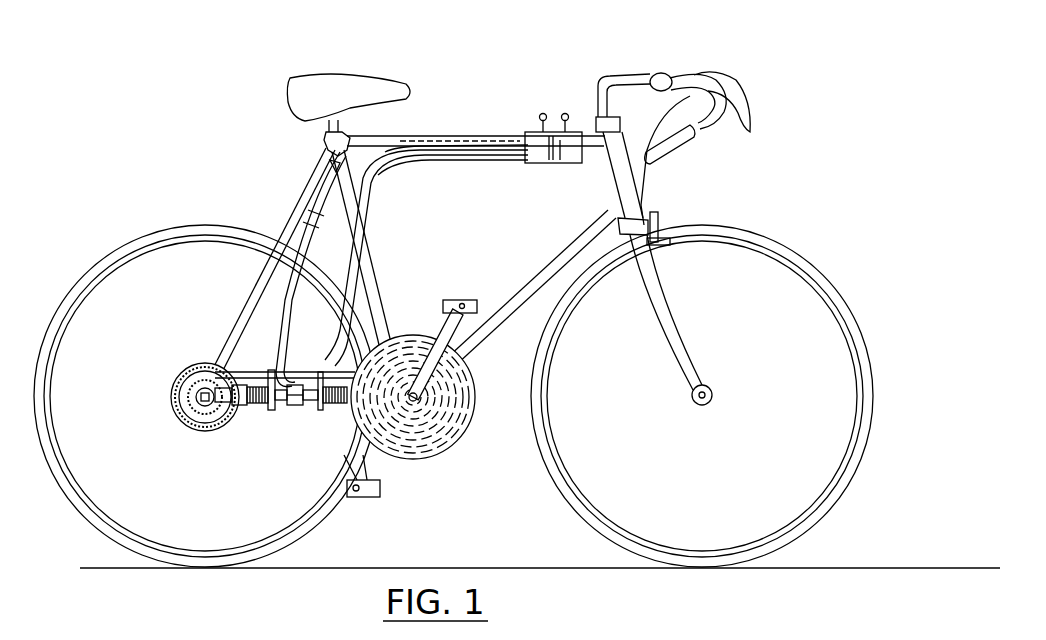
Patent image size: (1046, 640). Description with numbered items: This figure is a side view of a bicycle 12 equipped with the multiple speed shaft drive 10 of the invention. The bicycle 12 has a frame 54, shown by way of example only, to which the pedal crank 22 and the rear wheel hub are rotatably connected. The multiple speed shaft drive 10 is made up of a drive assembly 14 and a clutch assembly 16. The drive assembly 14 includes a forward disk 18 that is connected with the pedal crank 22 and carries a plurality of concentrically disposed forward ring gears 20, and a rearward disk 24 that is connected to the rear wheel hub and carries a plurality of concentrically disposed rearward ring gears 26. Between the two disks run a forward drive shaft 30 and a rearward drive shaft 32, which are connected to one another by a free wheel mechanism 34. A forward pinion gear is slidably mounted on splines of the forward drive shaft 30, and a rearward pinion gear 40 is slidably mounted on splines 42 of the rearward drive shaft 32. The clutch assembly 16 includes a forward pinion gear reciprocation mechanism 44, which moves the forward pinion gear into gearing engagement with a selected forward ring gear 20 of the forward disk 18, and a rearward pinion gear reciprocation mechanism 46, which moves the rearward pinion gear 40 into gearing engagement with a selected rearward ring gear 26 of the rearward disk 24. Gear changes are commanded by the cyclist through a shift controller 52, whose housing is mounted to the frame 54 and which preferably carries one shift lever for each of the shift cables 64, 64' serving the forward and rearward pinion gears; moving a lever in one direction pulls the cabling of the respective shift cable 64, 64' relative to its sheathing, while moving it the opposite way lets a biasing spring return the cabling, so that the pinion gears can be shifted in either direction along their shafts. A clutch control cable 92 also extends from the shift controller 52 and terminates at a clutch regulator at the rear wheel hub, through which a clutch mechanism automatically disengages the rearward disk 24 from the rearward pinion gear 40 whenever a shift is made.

The multiple speed shaft drive 10 is at (509, 172).
The bicycle 12 is at (722, 172).
The drive assembly 14 is at (266, 469).
The clutch assembly 16 is at (466, 170).
The forward disk 18 is at (472, 420).
The forward ring gears 20 is at (432, 440).
The pedal crank 22 is at (468, 333).
The rearward disk 24 is at (191, 432).
The rearward ring gears 26 is at (176, 412).
The forward drive shaft 30 is at (322, 407).
The rearward drive shaft 32 is at (294, 406).
The free wheel mechanism 34 is at (307, 410).
The rearward pinion gear 40 is at (256, 409).
The splines 42 is at (228, 418).
The forward pinion gear reciprocation mechanism 44 is at (323, 367).
The rearward pinion gear reciprocation mechanism 46 is at (264, 363).
The shift controller 52 is at (559, 170).
The frame 54 is at (431, 136).
The shift cable 64 is at (277, 269).
The shift cable 64' is at (456, 114).
The clutch control cable 92 is at (332, 162).